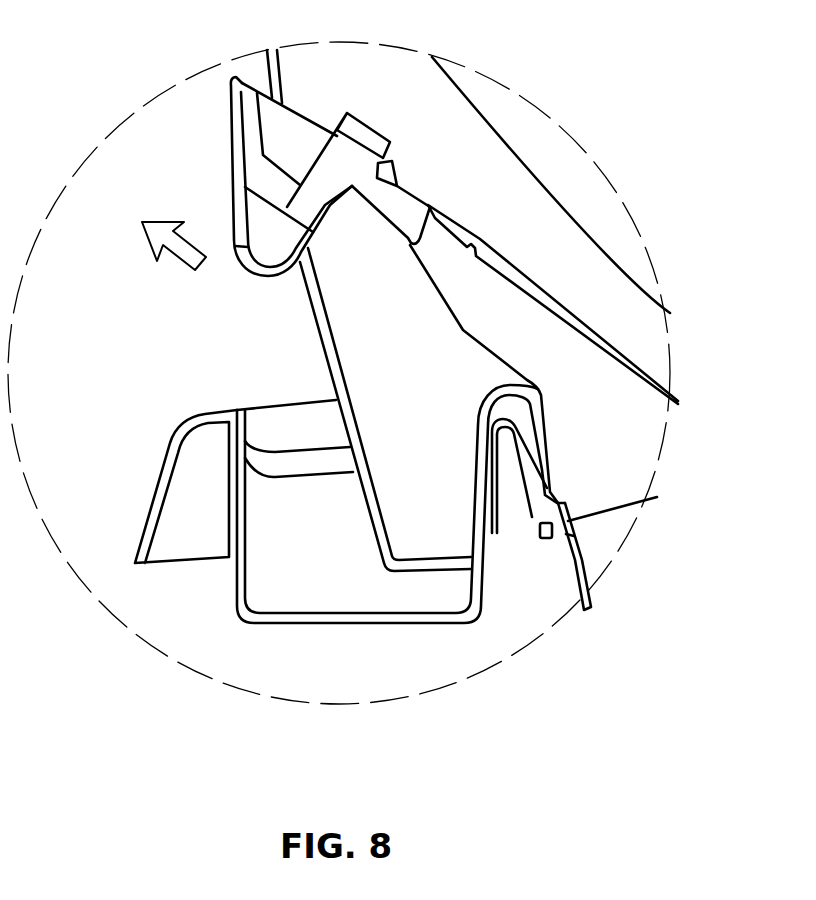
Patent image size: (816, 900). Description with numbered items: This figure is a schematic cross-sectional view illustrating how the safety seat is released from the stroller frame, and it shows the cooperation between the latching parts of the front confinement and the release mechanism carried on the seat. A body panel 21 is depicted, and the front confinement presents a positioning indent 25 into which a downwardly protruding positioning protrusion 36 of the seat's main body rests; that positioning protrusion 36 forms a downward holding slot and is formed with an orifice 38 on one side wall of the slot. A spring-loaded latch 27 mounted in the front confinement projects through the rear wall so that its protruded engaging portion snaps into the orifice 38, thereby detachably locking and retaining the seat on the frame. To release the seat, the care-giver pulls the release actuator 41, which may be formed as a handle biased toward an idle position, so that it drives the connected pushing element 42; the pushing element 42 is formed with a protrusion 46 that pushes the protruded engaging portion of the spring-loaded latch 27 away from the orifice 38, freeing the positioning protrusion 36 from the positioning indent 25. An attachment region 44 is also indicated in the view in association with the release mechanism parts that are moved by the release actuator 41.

The body panel 21 is at (605, 222).
The positioning indent 25 is at (240, 617).
The spring-loaded latch 27 is at (515, 528).
The positioning protrusion 36 is at (400, 513).
The orifice 38 is at (620, 550).
The release actuator 41 is at (280, 154).
The pushing element 42 is at (633, 440).
The attachment region 44 is at (160, 104).
The protrusion 46 is at (550, 490).